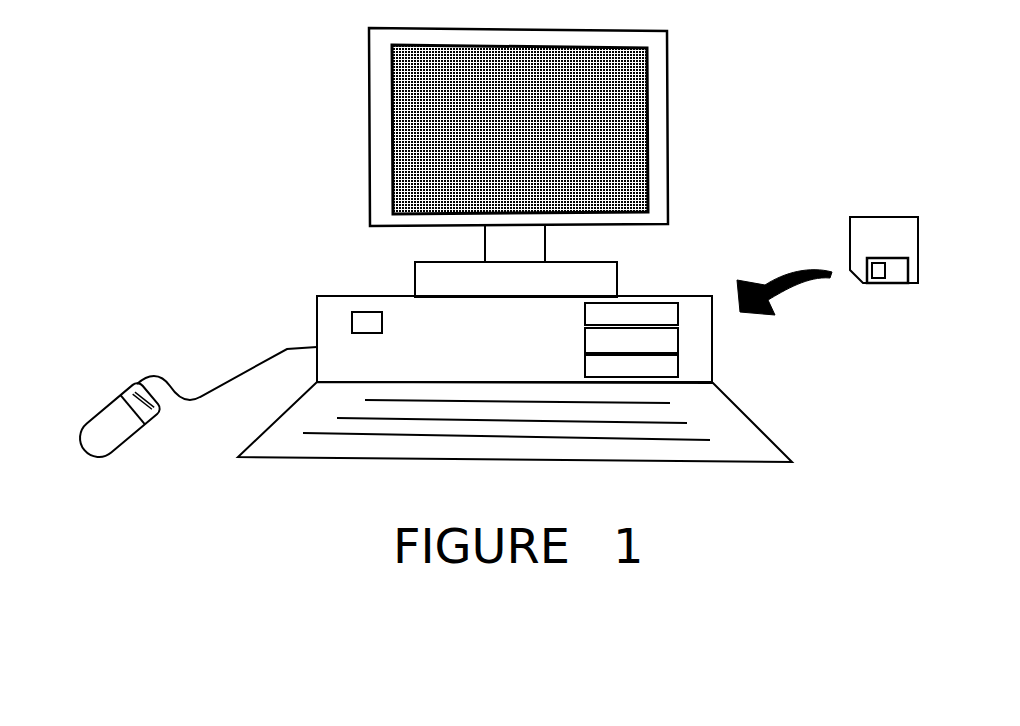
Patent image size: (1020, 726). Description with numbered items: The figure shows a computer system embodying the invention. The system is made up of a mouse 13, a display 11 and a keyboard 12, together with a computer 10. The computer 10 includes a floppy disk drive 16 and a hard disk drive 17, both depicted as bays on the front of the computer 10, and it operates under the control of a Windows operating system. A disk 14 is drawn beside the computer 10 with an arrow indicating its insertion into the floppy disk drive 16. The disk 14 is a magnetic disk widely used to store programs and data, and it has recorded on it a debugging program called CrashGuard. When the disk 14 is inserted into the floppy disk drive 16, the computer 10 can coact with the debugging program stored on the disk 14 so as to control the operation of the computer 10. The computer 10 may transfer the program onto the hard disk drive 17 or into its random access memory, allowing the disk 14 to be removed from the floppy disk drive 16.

The computer 10 is at (474, 301).
The display 11 is at (460, 162).
The keyboard 12 is at (545, 418).
The mouse 13 is at (174, 406).
The disk 14 is at (827, 221).
The floppy disk drive 16 is at (670, 262).
The hard disk drive 17 is at (716, 348).